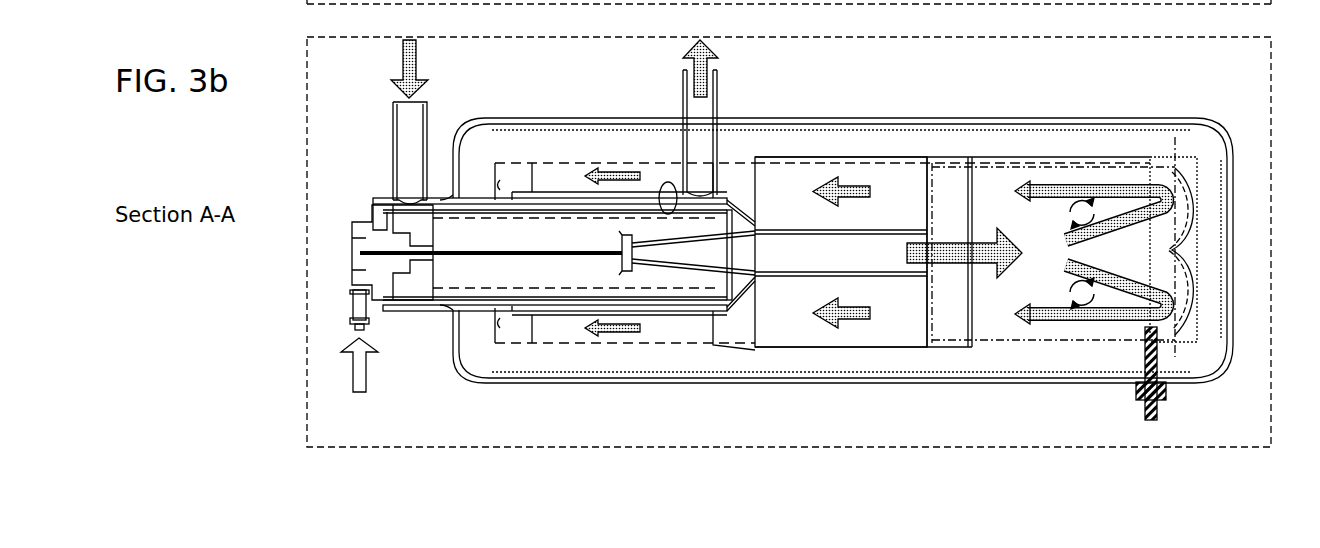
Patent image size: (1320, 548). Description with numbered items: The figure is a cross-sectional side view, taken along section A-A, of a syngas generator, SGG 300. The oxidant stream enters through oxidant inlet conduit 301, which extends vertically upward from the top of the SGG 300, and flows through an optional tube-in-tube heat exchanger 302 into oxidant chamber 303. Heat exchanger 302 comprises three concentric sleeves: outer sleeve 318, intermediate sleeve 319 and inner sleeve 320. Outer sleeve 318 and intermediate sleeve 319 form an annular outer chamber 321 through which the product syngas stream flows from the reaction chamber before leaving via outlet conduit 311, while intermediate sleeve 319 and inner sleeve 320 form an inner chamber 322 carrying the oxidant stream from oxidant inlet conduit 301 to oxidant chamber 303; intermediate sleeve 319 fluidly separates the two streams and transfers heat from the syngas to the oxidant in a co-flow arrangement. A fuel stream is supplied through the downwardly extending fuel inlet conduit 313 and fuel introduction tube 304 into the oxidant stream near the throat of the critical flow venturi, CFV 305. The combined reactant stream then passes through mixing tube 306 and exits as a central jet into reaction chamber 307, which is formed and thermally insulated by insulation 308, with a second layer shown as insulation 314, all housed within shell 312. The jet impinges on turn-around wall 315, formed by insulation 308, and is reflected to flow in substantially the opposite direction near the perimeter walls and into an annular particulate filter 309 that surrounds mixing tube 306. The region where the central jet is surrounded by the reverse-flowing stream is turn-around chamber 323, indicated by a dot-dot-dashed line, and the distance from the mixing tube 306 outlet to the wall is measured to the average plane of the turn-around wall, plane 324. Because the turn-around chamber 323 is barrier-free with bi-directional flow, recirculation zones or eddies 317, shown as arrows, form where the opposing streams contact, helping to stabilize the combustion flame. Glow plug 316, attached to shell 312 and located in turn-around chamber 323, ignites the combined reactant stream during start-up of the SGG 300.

The syngas generator (SGG) 300 is at (307, 188).
The oxidant inlet conduit 301 is at (400, 120).
The heat exchanger 302 is at (672, 183).
The oxidant chamber 303 is at (468, 258).
The fuel introduction tube 304 is at (452, 305).
The critical flow venturi (CFV) 305 is at (633, 257).
The mixing tube 306 is at (777, 255).
The reaction chamber 307 is at (935, 342).
The insulation 308 is at (942, 142).
The annular particulate filter 309 is at (883, 177).
The outlet conduit 311 is at (703, 110).
The shell 312 is at (783, 115).
The fuel inlet conduit 313 is at (343, 311).
The insulation (second layer) 314 is at (1028, 380).
The turn-around wall 315 is at (1198, 233).
The glow plug 316 is at (1165, 400).
The eddies (recirculation zones) 317 is at (1072, 202).
The outer sleeve 318 is at (518, 320).
The intermediate sleeve 319 is at (562, 307).
The inner sleeve 320 is at (487, 290).
The annular outer chamber 321 is at (530, 195).
The inner chamber 322 is at (587, 203).
The turn-around chamber 323 is at (998, 162).
The plane 324 is at (1180, 147).